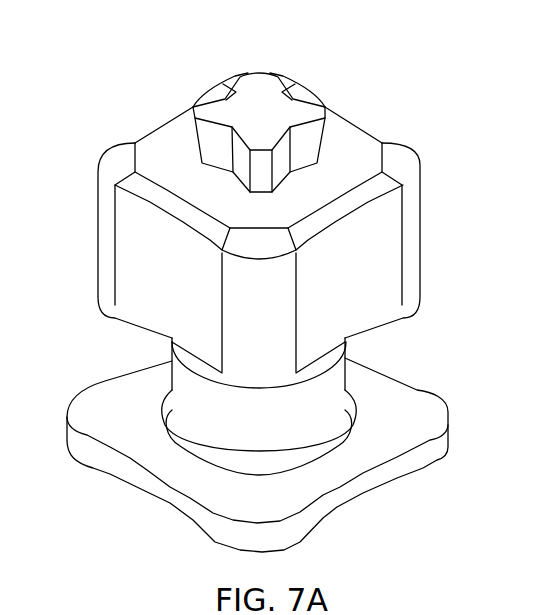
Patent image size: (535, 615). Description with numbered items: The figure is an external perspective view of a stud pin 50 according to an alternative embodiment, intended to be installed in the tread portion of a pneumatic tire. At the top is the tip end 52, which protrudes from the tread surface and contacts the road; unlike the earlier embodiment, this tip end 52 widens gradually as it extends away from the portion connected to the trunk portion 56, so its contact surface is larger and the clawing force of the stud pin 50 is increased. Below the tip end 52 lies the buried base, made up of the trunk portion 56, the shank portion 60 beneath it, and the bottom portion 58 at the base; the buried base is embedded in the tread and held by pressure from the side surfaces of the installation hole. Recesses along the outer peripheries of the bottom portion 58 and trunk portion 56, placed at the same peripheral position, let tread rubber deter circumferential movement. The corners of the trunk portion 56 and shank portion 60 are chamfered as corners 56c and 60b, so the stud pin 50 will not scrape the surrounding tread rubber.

The stud pin 50 is at (100, 117).
The tip end 52 is at (258, 112).
The trunk portion 56 is at (343, 265).
The chamfered corner of the trunk portion 56c is at (385, 182).
The bottom portion 58 is at (360, 482).
The shank portion 60 is at (347, 380).
The chamfered corner of the shank portion 60b is at (197, 365).